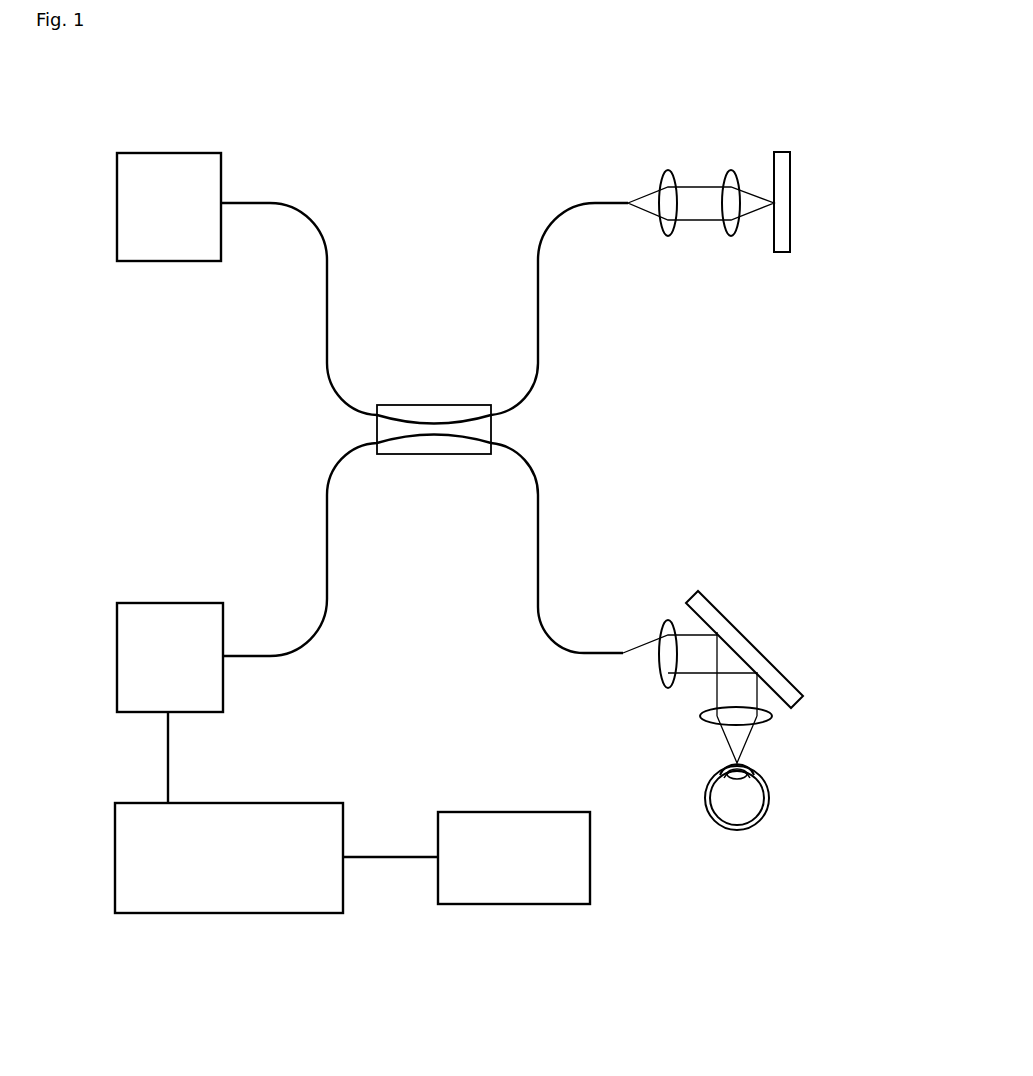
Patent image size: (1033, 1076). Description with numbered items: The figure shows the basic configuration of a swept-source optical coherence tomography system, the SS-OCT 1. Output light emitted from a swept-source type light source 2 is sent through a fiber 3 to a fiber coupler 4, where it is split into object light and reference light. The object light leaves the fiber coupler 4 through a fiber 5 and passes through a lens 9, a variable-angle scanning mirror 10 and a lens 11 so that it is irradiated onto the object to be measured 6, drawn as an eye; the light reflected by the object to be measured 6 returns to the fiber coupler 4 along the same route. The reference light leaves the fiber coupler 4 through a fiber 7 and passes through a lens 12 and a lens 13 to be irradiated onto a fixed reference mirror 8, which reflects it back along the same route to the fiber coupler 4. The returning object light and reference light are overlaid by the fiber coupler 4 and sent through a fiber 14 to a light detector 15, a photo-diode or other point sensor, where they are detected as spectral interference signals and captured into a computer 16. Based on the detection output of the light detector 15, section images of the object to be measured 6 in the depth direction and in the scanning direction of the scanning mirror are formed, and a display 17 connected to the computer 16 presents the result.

The SS-OCT 1 is at (431, 84).
The swept-source type light source 2 is at (178, 152).
The fiber 3 is at (318, 230).
The fiber coupler 4 is at (390, 405).
The fiber 5 is at (542, 619).
The object to be measured 6 is at (715, 822).
The fiber 7 is at (552, 222).
The fixed reference mirror 8 is at (773, 152).
The lens 9 is at (665, 623).
The variable-angle scanning mirror 10 is at (695, 593).
The lens 11 is at (704, 718).
The lens 12 is at (666, 236).
The lens 13 is at (729, 236).
The fiber 14 is at (330, 608).
The light detector 15 is at (173, 603).
The computer 16 is at (290, 803).
The display 17 is at (522, 811).